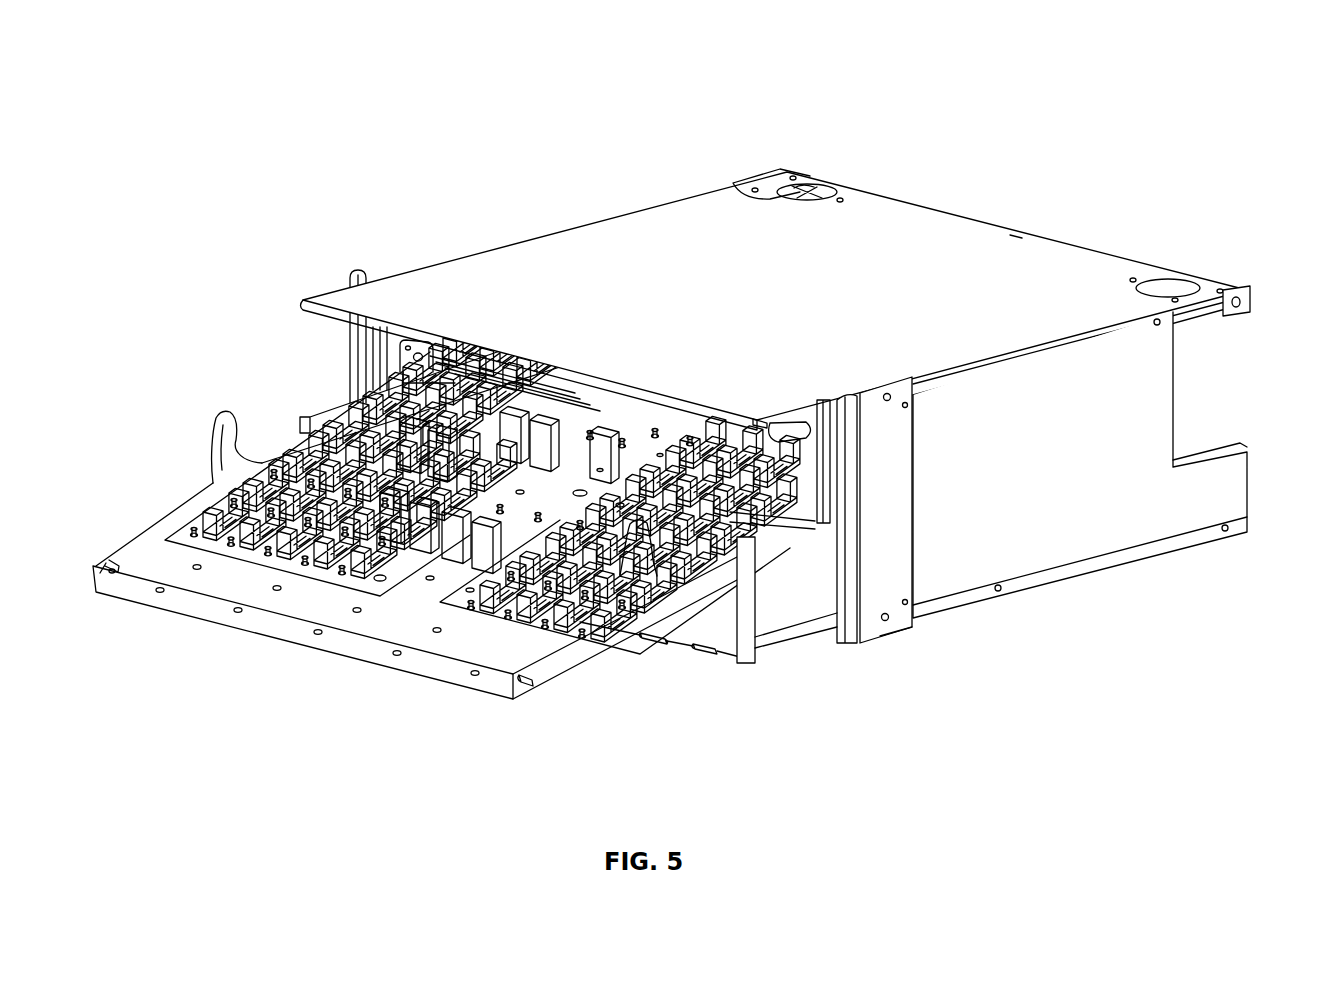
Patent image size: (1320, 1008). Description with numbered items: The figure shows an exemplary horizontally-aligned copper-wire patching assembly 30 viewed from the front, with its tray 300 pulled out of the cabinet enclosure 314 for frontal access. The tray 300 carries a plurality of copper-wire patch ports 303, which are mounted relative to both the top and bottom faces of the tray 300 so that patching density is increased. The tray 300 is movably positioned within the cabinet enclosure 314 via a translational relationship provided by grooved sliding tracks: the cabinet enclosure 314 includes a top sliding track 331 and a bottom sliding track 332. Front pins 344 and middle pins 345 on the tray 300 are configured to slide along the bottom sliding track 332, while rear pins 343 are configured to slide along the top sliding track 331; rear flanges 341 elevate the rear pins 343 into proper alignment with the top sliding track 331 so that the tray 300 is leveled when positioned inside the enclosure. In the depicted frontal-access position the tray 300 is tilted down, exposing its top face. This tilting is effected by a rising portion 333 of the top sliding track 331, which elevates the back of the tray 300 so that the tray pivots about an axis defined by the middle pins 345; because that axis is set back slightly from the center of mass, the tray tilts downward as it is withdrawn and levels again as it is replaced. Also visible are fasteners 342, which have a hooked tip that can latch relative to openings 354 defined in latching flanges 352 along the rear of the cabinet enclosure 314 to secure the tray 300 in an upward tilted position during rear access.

The horizontally-aligned copper-wire patching assembly 30 is at (774, 361).
The tray 300 is at (431, 547).
The copper-wire patch ports 303 is at (440, 610).
The cabinet enclosure 314 is at (1092, 602).
The top sliding track 331 is at (497, 360).
The bottom sliding track 332 is at (525, 373).
The rising portion 333 is at (407, 340).
The rear flanges 341 is at (417, 367).
The fasteners 342 is at (233, 450).
The rear pins 343 is at (428, 353).
The front pins 344 is at (117, 565).
The middle pins 345 is at (717, 550).
The latching flanges 352 is at (757, 200).
The openings 354 is at (782, 183).